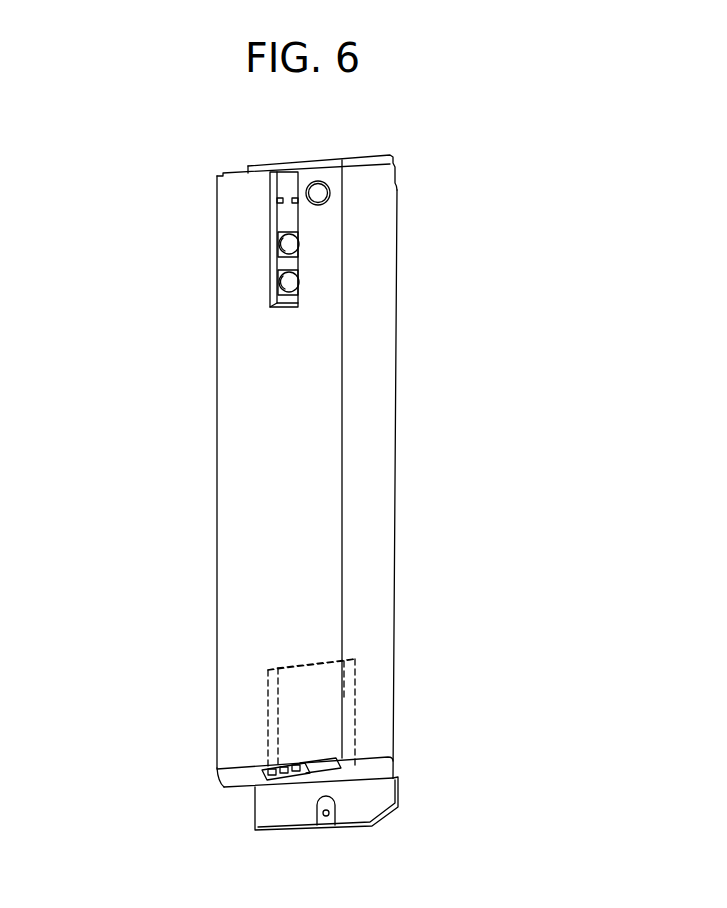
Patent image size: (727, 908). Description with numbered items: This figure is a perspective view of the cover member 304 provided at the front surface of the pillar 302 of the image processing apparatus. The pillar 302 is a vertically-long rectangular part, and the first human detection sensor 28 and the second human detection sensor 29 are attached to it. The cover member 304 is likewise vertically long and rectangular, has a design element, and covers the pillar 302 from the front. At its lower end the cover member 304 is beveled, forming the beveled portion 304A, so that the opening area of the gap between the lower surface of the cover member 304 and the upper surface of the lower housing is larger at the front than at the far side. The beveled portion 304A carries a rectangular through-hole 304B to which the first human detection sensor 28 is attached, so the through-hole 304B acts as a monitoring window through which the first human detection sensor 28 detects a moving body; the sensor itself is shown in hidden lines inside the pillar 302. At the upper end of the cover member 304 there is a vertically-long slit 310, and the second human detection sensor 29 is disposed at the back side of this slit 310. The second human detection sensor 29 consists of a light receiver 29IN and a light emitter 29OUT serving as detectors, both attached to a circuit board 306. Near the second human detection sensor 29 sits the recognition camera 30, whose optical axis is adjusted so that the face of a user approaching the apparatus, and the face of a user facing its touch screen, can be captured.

The pillar 302 is at (317, 492).
The cover member 304 is at (232, 372).
The beveled portion 304A is at (218, 774).
The through-hole 304B is at (270, 778).
The circuit board 306 is at (288, 181).
The slit 310 is at (278, 226).
The recognition camera 30 is at (330, 192).
The second human detection sensor 29 is at (427, 267).
The light receiver 29IN is at (290, 245).
The light emitter 29OUT is at (290, 283).
The first human detection sensor 28 is at (355, 702).